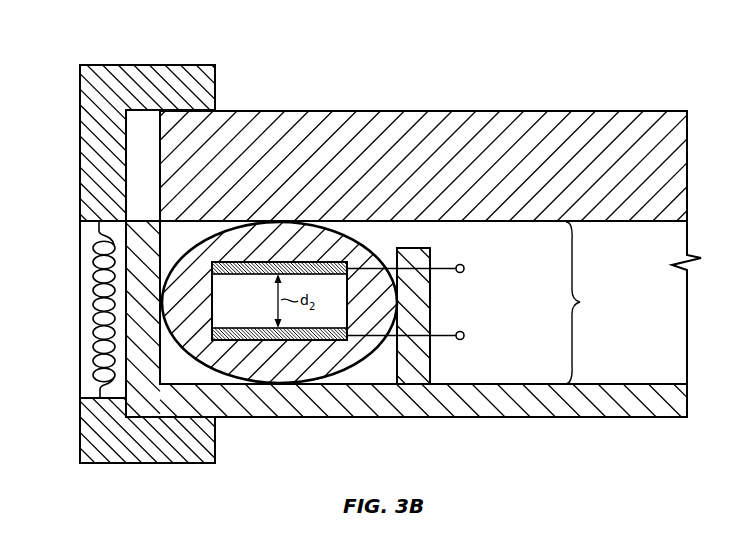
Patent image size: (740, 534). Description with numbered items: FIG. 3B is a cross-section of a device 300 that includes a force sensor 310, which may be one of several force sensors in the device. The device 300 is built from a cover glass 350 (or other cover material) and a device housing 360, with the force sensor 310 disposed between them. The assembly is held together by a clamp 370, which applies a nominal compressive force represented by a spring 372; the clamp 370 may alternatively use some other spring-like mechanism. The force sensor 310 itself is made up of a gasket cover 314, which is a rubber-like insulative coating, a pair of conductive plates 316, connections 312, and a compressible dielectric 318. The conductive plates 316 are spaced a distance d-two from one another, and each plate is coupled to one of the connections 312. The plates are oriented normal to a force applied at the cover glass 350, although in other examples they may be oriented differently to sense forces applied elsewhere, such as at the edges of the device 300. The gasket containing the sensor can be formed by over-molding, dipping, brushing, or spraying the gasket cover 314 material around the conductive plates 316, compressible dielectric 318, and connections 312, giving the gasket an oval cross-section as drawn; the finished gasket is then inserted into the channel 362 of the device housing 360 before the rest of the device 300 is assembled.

The device 300 is at (118, 52).
The force sensor 310 is at (588, 303).
The connections 312 is at (464, 269).
The gasket cover 314 is at (178, 344).
The conductive plates 316 is at (268, 262).
The compressible dielectric 318 is at (333, 262).
The cover glass 350 is at (512, 111).
The device housing 360 is at (432, 406).
The channel 362 is at (432, 348).
The clamp 370 is at (80, 107).
The spring 372 is at (92, 360).